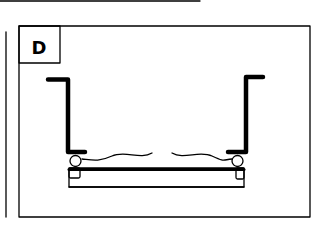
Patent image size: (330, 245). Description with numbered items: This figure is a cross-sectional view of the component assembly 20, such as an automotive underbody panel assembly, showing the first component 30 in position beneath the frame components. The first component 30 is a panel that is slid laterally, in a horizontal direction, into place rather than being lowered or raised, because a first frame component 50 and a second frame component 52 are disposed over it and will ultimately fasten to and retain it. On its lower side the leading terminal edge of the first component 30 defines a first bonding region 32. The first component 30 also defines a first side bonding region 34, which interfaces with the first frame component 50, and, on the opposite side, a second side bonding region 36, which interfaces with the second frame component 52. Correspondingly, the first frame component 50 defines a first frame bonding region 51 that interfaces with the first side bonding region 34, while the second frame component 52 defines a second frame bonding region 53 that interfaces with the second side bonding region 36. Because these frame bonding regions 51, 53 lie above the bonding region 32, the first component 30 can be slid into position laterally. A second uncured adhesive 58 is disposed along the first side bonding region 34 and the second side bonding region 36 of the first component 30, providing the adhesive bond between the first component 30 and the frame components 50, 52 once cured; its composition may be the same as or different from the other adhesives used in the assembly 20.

The component assembly 20 is at (151, 62).
The first component 30 is at (145, 182).
The first bonding region 32 is at (172, 187).
The first side bonding region 34 is at (72, 178).
The second side bonding region 36 is at (242, 176).
The first frame component 50 is at (70, 92).
The first frame bonding region 51 is at (68, 154).
The second frame component 52 is at (243, 88).
The second frame bonding region 53 is at (243, 154).
The second uncured adhesive 58 is at (157, 150).